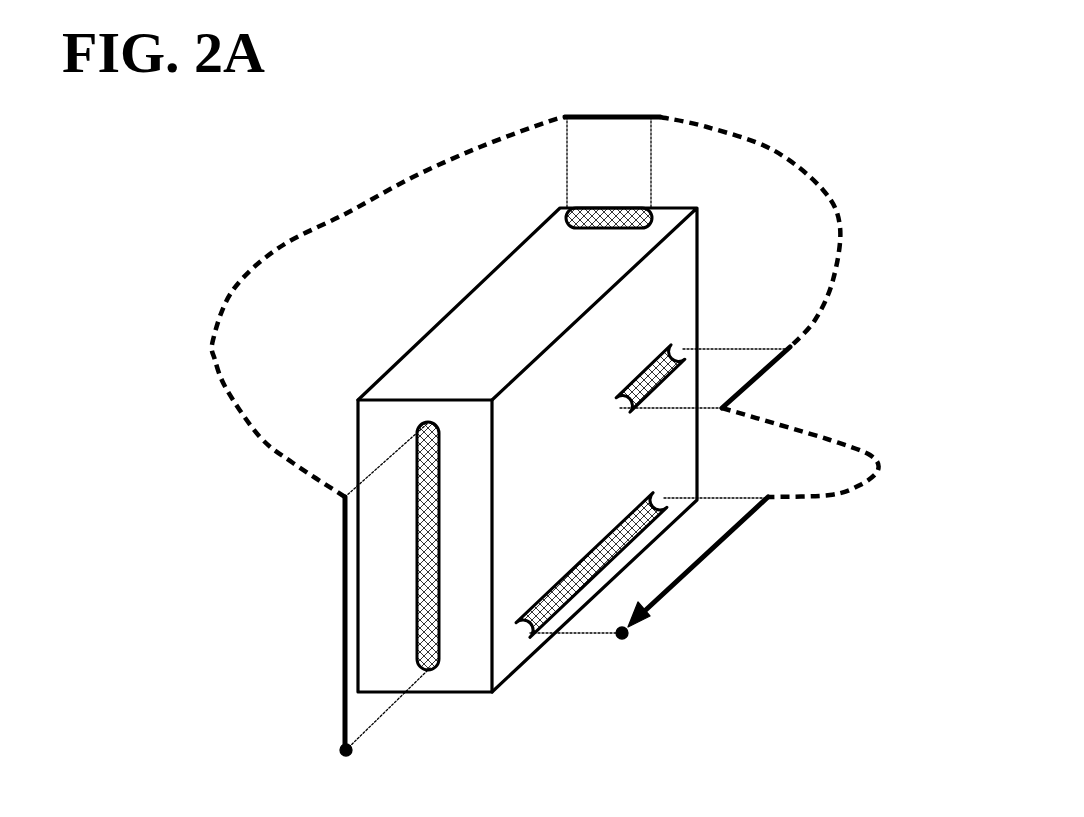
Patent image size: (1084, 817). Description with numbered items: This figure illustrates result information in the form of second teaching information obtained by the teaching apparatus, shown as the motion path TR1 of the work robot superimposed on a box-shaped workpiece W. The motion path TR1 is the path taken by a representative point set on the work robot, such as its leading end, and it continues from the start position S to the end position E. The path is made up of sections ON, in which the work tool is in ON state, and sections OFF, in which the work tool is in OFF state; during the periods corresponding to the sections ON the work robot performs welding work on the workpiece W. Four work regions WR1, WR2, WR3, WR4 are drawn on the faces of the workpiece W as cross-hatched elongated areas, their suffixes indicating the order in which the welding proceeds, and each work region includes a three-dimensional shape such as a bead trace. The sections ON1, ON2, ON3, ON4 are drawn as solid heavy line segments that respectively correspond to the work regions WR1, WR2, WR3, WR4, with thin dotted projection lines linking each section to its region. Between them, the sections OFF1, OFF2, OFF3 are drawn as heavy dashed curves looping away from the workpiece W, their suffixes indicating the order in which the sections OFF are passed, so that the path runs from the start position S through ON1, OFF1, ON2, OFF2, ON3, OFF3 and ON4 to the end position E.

The workpiece W is at (733, 275).
The motion path TR1 is at (508, 397).
The first work region WR1 is at (430, 428).
The second work region WR2 is at (605, 220).
The third work region WR3 is at (660, 380).
The fourth work region WR4 is at (618, 543).
The first section ON ON1 is at (346, 627).
The second section ON ON2 is at (605, 112).
The third section ON ON3 is at (755, 382).
The fourth section ON ON4 is at (698, 572).
The first section OFF OFF1 is at (218, 318).
The second section OFF OFF2 is at (802, 158).
The third section OFF OFF3 is at (827, 485).
The start position S is at (343, 750).
The end position E is at (625, 640).